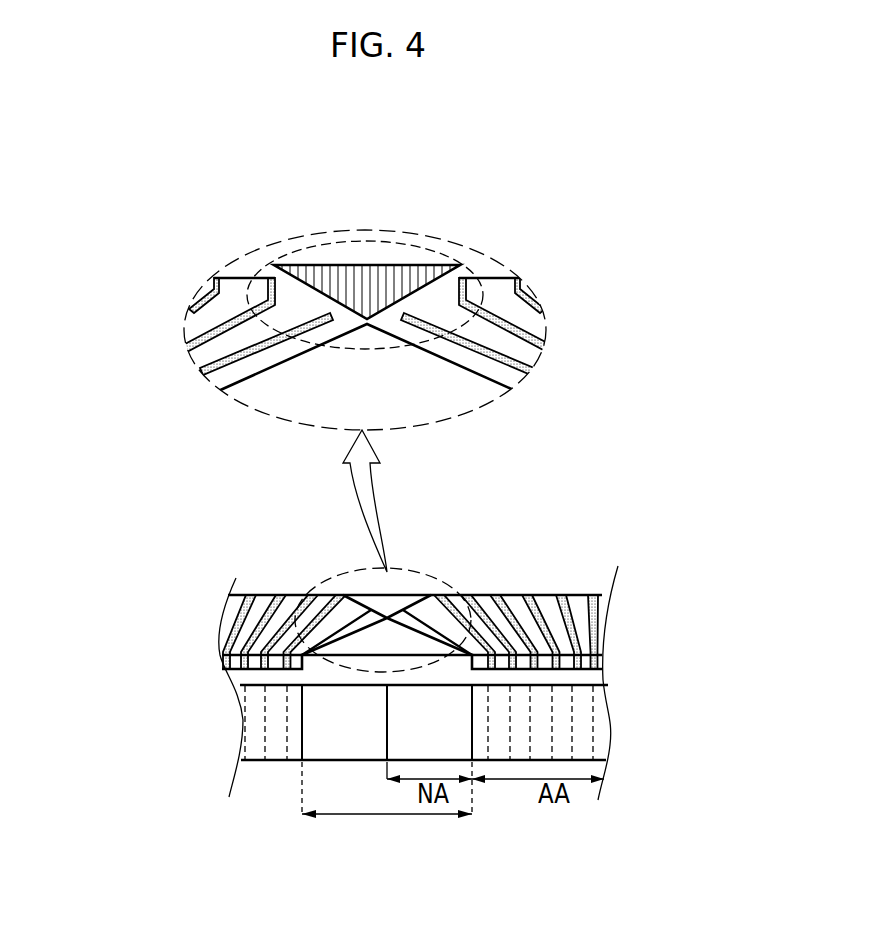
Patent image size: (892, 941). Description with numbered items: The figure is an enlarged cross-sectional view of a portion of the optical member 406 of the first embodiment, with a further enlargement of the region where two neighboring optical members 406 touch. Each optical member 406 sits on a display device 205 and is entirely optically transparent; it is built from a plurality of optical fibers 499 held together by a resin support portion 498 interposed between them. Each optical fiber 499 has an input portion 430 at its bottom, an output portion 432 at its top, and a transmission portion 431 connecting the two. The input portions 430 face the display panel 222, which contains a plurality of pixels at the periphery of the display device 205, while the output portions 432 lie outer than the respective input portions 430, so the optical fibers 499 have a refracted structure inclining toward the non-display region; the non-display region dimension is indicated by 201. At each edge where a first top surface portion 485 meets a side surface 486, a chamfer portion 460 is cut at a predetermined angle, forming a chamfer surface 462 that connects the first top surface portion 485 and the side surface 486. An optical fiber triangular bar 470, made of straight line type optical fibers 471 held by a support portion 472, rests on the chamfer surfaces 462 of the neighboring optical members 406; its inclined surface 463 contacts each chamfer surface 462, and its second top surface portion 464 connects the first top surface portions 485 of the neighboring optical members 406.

The width of non-display region 201 is at (387, 802).
The display device 205 is at (579, 820).
The display panel 222 is at (603, 725).
The optical member 406 is at (567, 521).
The input portion 430 is at (297, 667).
The transmission portion 431 is at (243, 652).
The output portion 432 is at (300, 605).
The chamfer portion 460 is at (214, 278).
The chamfer surface 462 is at (208, 327).
The inclined surface 463 is at (275, 278).
The second top surface portion 464 is at (360, 265).
The optical fiber triangular bar 470 is at (365, 360).
The optical fiber 471 is at (410, 265).
The support portion 472 is at (459, 264).
The first top surface portion 485 is at (272, 265).
The side surface 486 is at (212, 307).
The resin support portion 498 is at (203, 372).
The optical fiber 499 is at (337, 550).